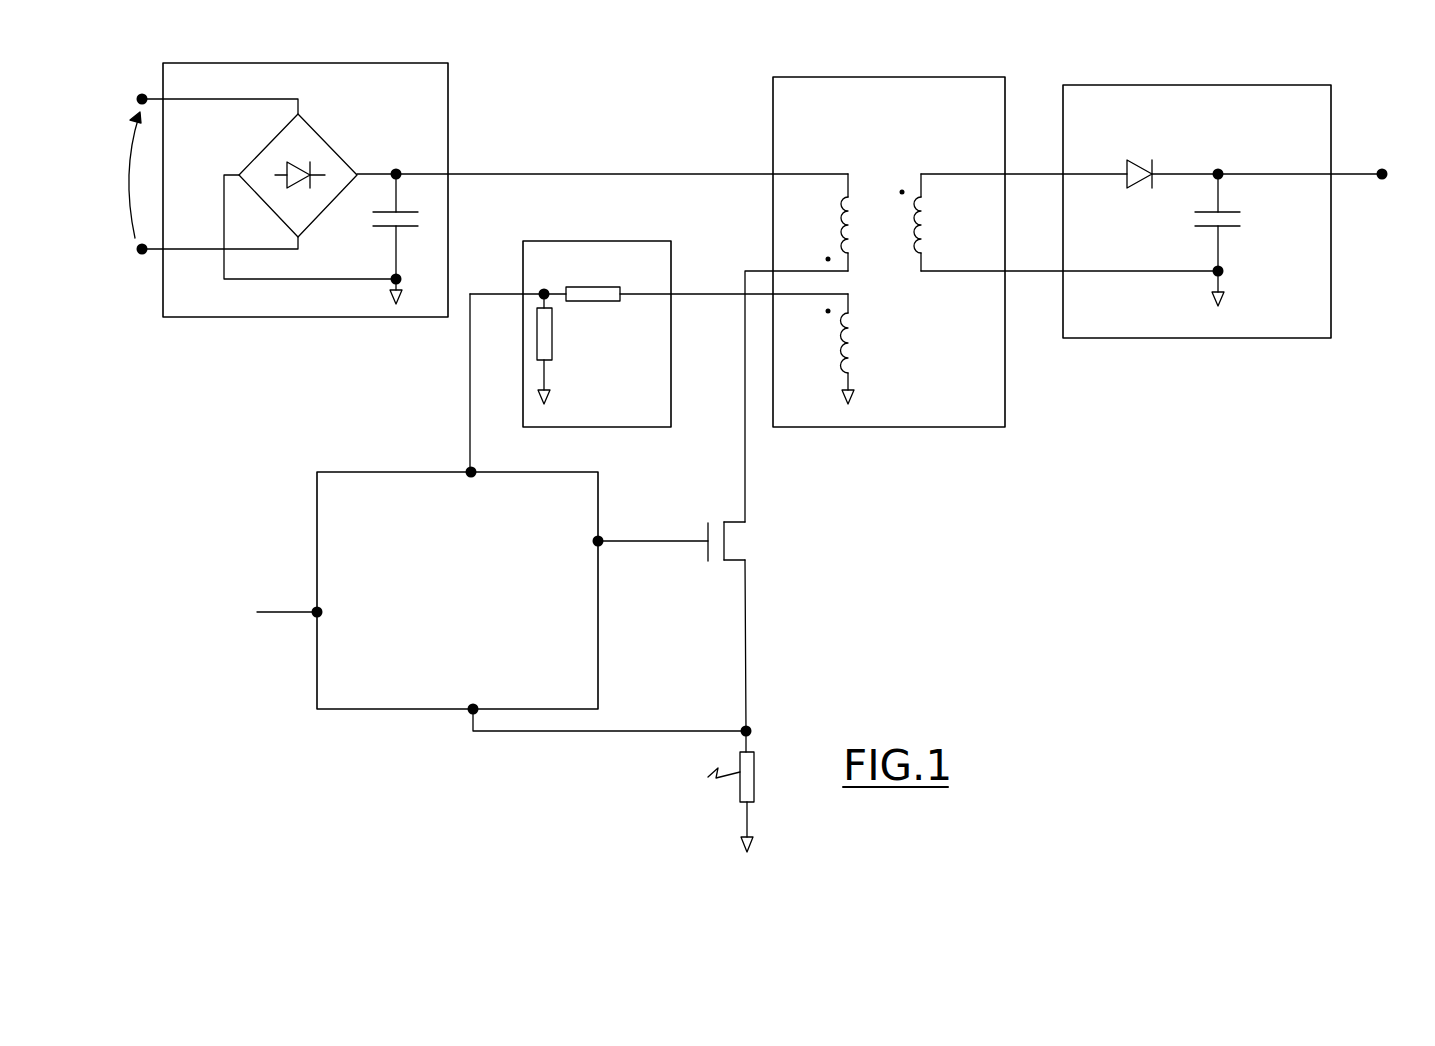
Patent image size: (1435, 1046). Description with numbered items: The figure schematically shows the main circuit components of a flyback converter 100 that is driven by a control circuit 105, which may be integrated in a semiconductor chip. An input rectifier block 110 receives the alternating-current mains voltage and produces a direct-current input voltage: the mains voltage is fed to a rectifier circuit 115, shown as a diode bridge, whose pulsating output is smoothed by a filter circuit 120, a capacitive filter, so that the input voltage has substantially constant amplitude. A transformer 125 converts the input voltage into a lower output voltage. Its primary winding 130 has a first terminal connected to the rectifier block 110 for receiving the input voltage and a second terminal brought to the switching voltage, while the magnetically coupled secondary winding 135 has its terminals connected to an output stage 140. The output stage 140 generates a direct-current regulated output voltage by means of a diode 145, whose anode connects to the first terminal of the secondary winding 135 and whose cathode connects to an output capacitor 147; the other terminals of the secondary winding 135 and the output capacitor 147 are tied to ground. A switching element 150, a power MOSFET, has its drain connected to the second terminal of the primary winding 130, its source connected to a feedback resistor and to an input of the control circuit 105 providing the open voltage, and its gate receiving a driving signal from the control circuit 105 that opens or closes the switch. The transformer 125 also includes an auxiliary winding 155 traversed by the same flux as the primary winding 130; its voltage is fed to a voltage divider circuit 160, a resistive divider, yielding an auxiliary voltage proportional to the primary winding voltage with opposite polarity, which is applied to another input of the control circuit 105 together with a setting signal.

The flyback converter 100 is at (744, 457).
The control circuit 105 is at (458, 570).
The input rectifier block 110 is at (269, 211).
The rectifier circuit 115 is at (302, 163).
The filter circuit 120 is at (381, 226).
The transformer 125 is at (921, 252).
The primary winding 130 is at (814, 222).
The secondary winding 135 is at (948, 222).
The output stage 140 is at (1229, 211).
The diode 145 is at (1114, 160).
The output capacitor 147 is at (1249, 222).
The switching element 150 is at (762, 541).
The auxiliary winding 155 is at (873, 349).
The voltage divider circuit 160 is at (659, 312).